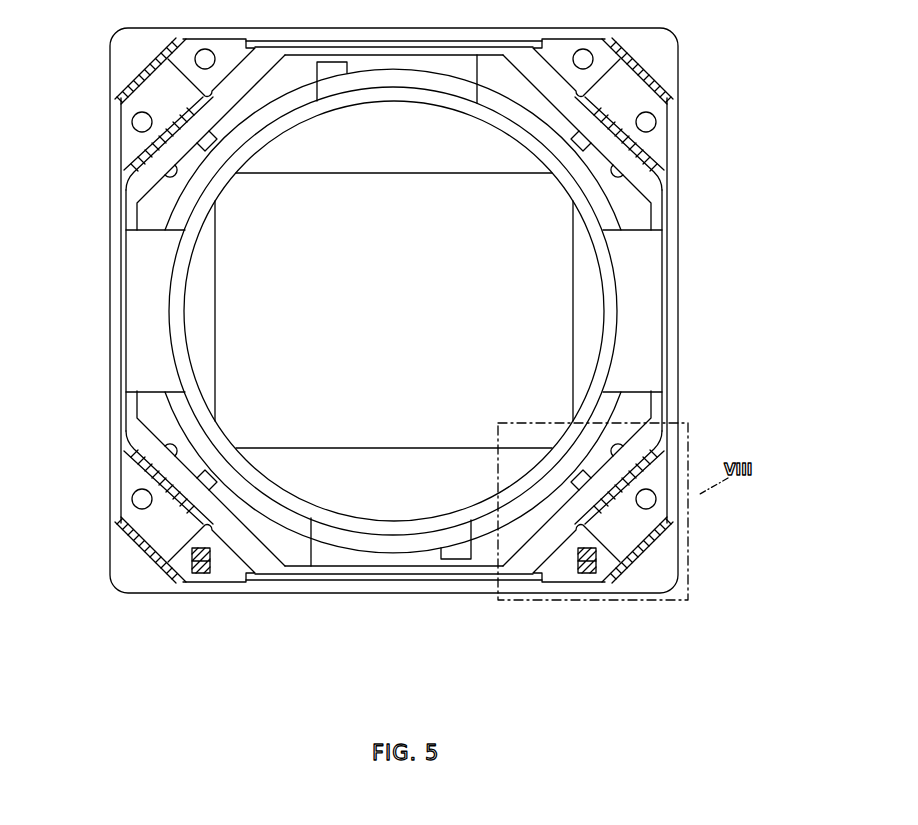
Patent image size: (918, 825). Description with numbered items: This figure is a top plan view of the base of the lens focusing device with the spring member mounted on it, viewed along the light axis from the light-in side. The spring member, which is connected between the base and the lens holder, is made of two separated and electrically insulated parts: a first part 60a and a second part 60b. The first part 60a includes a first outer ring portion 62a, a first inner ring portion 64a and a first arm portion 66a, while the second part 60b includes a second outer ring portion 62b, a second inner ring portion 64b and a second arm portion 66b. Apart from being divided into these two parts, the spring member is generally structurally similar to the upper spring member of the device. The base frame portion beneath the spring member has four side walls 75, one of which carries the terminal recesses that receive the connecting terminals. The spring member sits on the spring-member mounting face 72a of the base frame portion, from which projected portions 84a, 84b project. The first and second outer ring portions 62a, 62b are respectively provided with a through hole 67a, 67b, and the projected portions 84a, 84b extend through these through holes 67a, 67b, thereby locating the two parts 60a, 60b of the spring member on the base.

The first part 60a is at (616, 104).
The second part 60b is at (172, 104).
The first outer ring portion 62a is at (630, 537).
The second outer ring portion 62b is at (162, 548).
The first inner ring portion 64a is at (507, 543).
The second inner ring portion 64b is at (283, 87).
The first arm portion 66a is at (663, 291).
The second arm portion 66b is at (125, 287).
The through hole 67a is at (581, 592).
The through hole 67b is at (197, 580).
The spring-member mounting face 72a is at (635, 470).
The side wall 75 is at (387, 597).
The projected portion 84a is at (592, 552).
The projected portion 84b is at (200, 557).